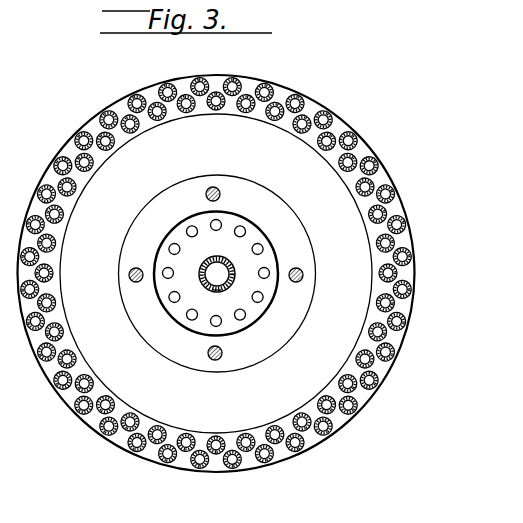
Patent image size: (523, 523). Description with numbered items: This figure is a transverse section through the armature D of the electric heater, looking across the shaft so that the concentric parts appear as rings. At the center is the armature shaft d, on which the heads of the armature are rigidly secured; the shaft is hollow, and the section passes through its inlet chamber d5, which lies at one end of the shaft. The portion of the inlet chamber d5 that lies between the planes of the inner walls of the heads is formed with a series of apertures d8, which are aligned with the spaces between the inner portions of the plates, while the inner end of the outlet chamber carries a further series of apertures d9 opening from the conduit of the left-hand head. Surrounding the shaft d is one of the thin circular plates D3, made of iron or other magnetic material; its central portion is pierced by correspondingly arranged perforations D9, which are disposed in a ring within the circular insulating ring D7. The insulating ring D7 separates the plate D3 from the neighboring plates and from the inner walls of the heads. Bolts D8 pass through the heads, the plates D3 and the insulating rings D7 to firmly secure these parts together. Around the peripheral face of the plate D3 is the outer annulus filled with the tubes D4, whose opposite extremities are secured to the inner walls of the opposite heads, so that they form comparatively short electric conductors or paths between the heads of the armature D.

The armature D is at (412, 208).
The thin circular plates D3 is at (216, 273).
The tubes D4 is at (221, 263).
The circular insulating rings D7 is at (125, 296).
The bolts D8 is at (215, 361).
The perforations D9 is at (294, 357).
The armature shaft d is at (221, 256).
The inlet chamber d5 is at (221, 277).
The apertures d8 is at (218, 289).
The apertures d9 is at (200, 275).